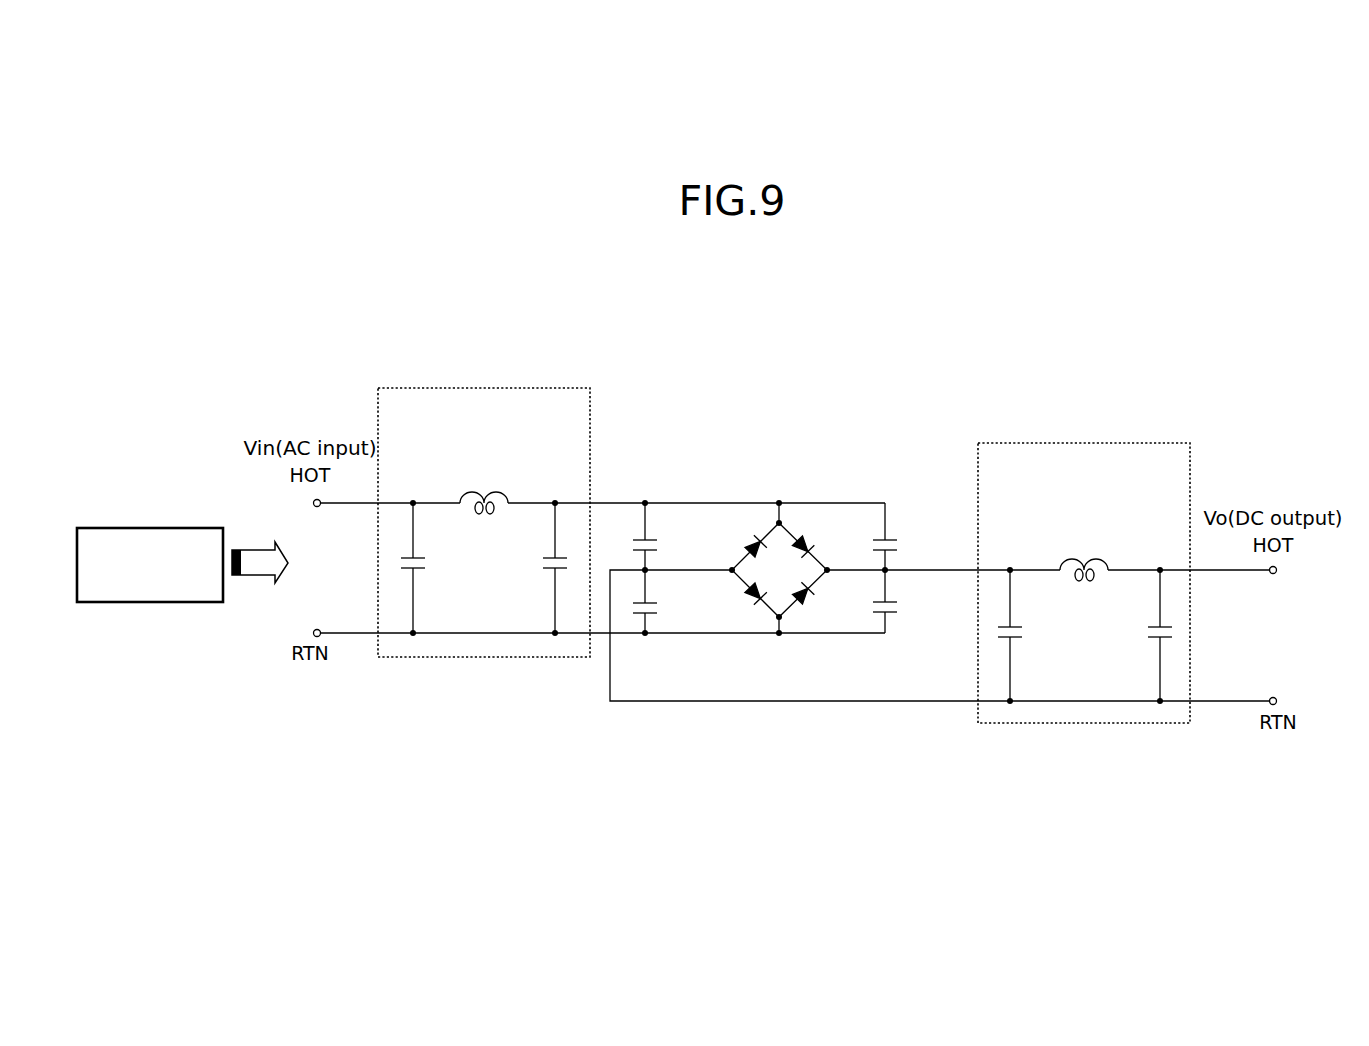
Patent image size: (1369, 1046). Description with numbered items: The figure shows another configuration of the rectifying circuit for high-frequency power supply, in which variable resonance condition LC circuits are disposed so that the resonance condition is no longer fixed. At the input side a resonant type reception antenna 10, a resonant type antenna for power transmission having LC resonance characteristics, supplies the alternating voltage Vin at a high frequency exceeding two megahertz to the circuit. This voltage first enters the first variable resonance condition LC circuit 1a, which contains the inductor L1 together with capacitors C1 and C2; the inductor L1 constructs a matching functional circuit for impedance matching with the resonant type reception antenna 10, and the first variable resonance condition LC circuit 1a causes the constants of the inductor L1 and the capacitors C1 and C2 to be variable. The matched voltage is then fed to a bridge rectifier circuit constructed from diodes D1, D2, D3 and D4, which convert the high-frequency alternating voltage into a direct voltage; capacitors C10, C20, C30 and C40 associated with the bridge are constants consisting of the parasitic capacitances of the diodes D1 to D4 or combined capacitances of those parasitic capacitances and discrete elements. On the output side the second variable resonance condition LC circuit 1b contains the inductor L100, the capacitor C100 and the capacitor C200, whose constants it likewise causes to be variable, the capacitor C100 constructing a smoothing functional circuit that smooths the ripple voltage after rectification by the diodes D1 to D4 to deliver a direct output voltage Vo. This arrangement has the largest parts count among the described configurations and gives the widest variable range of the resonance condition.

The resonant type reception antenna 10 is at (156, 527).
The first variable resonance condition LC circuit 1a is at (484, 504).
The second variable resonance condition LC circuit 1b is at (1124, 564).
The inductor L1 is at (484, 491).
The capacitor C1 is at (427, 568).
The capacitor C2 is at (539, 568).
The capacitor C10 is at (665, 536).
The capacitor C20 is at (665, 601).
The capacitor C30 is at (905, 536).
The capacitor C40 is at (905, 601).
The diode D1 is at (747, 540).
The diode D2 is at (747, 600).
The diode D3 is at (812, 539).
The diode D4 is at (812, 601).
The inductor L100 is at (1084, 557).
The capacitor C100 is at (1035, 635).
The capacitor C200 is at (1132, 635).